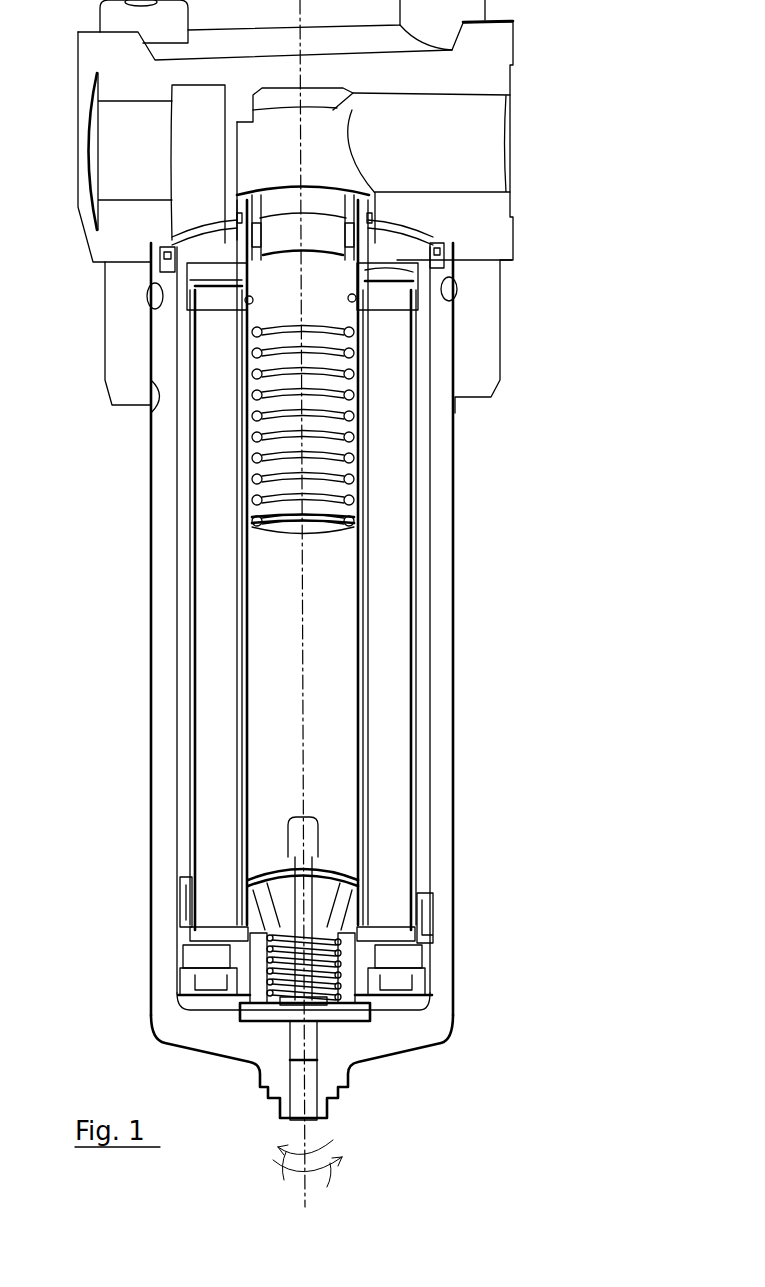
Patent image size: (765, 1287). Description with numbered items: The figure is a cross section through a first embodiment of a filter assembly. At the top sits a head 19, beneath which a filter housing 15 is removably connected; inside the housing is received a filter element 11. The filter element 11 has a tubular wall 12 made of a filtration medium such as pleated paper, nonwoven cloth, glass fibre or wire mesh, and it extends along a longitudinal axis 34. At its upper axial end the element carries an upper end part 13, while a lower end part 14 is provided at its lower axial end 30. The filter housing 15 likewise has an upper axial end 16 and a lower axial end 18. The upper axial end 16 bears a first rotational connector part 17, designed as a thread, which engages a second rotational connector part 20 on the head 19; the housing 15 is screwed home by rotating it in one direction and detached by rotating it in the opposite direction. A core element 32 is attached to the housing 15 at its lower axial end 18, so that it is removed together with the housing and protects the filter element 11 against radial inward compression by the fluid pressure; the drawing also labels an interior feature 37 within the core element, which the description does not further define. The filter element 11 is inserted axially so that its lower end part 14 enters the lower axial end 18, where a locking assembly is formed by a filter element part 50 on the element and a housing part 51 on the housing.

The filter element 11 is at (417, 632).
The tubular wall 12 is at (392, 709).
The upper end part 13 is at (388, 270).
The lower end part 14 is at (405, 943).
The filter housing 15 is at (433, 830).
The upper axial end 16 is at (442, 342).
The first rotational connector part 17 is at (148, 418).
The lower axial end 18 is at (167, 1015).
The head 19 is at (487, 47).
The second rotational connector part 20 is at (150, 350).
The lower axial end 30 is at (408, 992).
The core element 32 is at (367, 565).
The longitudinal axis 34 is at (307, 1130).
The central channel 37 is at (340, 778).
The filter element part of the locking assembly 50 is at (187, 938).
The housing part of the locking assembly 51 is at (188, 988).